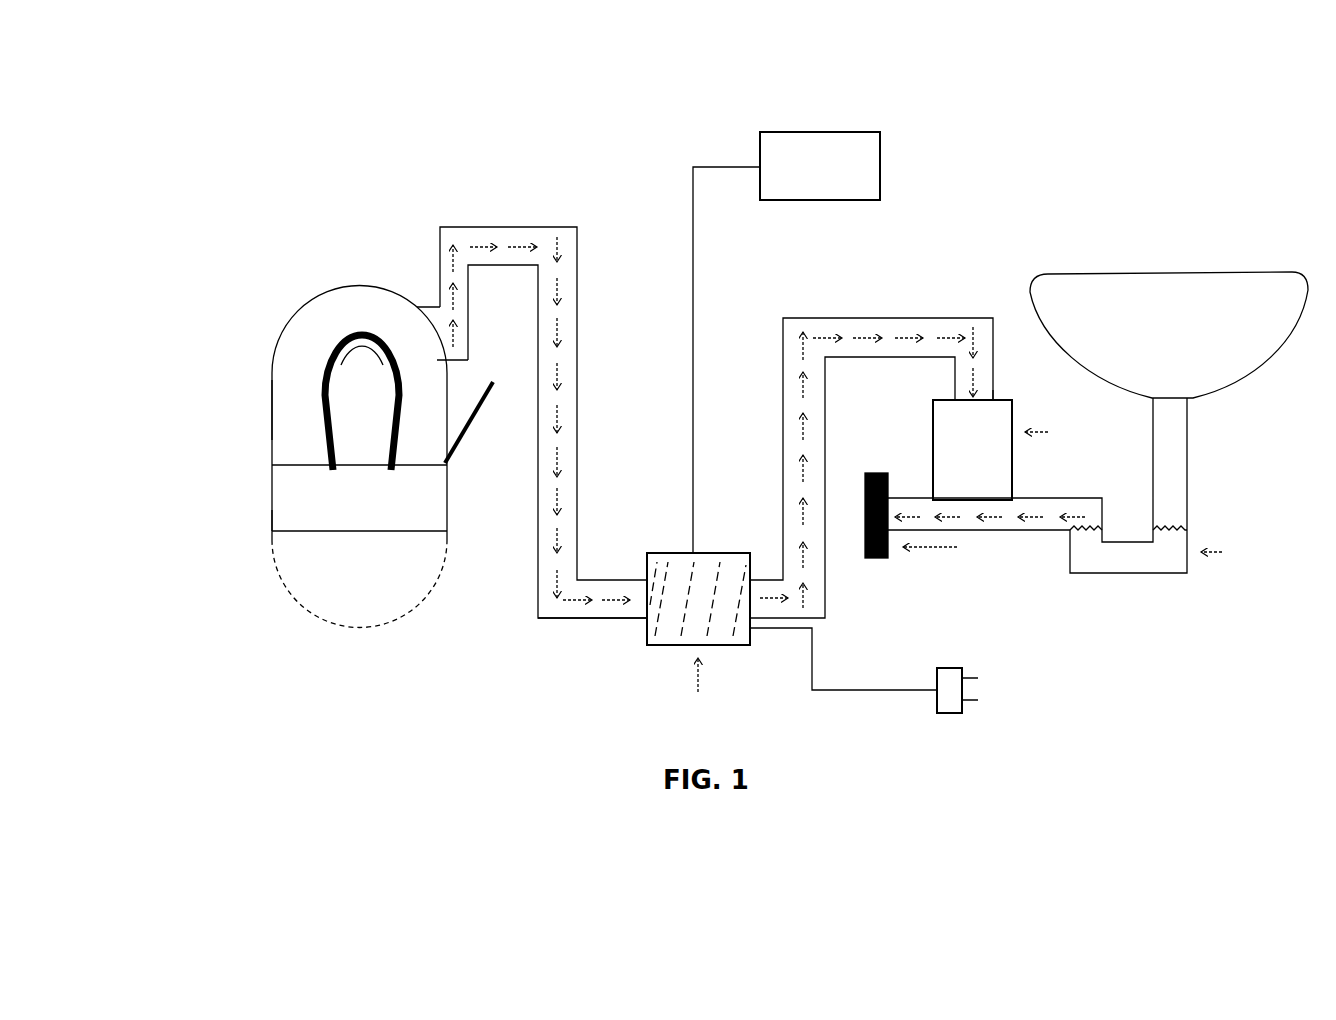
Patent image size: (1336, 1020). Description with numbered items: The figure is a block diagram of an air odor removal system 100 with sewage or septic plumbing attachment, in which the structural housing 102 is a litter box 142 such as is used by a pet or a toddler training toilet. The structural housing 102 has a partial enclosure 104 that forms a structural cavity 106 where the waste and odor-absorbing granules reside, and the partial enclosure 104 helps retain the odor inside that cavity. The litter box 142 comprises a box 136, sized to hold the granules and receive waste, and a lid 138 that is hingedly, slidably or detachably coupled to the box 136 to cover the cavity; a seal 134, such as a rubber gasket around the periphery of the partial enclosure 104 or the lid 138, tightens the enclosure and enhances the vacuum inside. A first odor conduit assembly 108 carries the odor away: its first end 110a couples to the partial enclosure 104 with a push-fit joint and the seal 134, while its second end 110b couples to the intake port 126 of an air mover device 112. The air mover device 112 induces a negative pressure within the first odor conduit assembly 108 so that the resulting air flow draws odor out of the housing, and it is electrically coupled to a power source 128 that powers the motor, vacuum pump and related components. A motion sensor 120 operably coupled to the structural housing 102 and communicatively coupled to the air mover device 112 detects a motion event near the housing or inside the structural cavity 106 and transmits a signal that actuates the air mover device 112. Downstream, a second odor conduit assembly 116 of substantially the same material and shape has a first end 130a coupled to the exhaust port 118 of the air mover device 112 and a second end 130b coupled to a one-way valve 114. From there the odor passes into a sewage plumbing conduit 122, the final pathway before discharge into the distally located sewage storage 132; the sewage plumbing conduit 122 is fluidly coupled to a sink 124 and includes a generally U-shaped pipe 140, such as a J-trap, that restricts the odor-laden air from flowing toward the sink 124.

The air odor removal system 100 is at (176, 146).
The structural housing 102 is at (329, 273).
The partial enclosure 104 is at (281, 360).
The structural cavity 106 is at (352, 388).
The first odor conduit assembly 108 is at (447, 228).
The first end 110a is at (418, 307).
The second end 110b is at (648, 628).
The air mover device 112 is at (698, 645).
The one-way valve 114 is at (933, 411).
The second odor conduit assembly 116 is at (808, 318).
The exhaust port 118 is at (754, 572).
The motion sensor 120 is at (812, 132).
The sewage plumbing conduit 122 is at (1053, 531).
The sink 124 is at (1105, 276).
The intake port 126 is at (644, 572).
The power source 128 is at (943, 714).
The first end 130a is at (797, 623).
The second end 130b is at (997, 400).
The sewage storage 132 is at (870, 473).
The seal 134 is at (362, 333).
The box 136 is at (272, 514).
The lid 138 is at (473, 417).
The generally U-shaped pipe 140 is at (1178, 545).
The litter box 142 is at (272, 543).